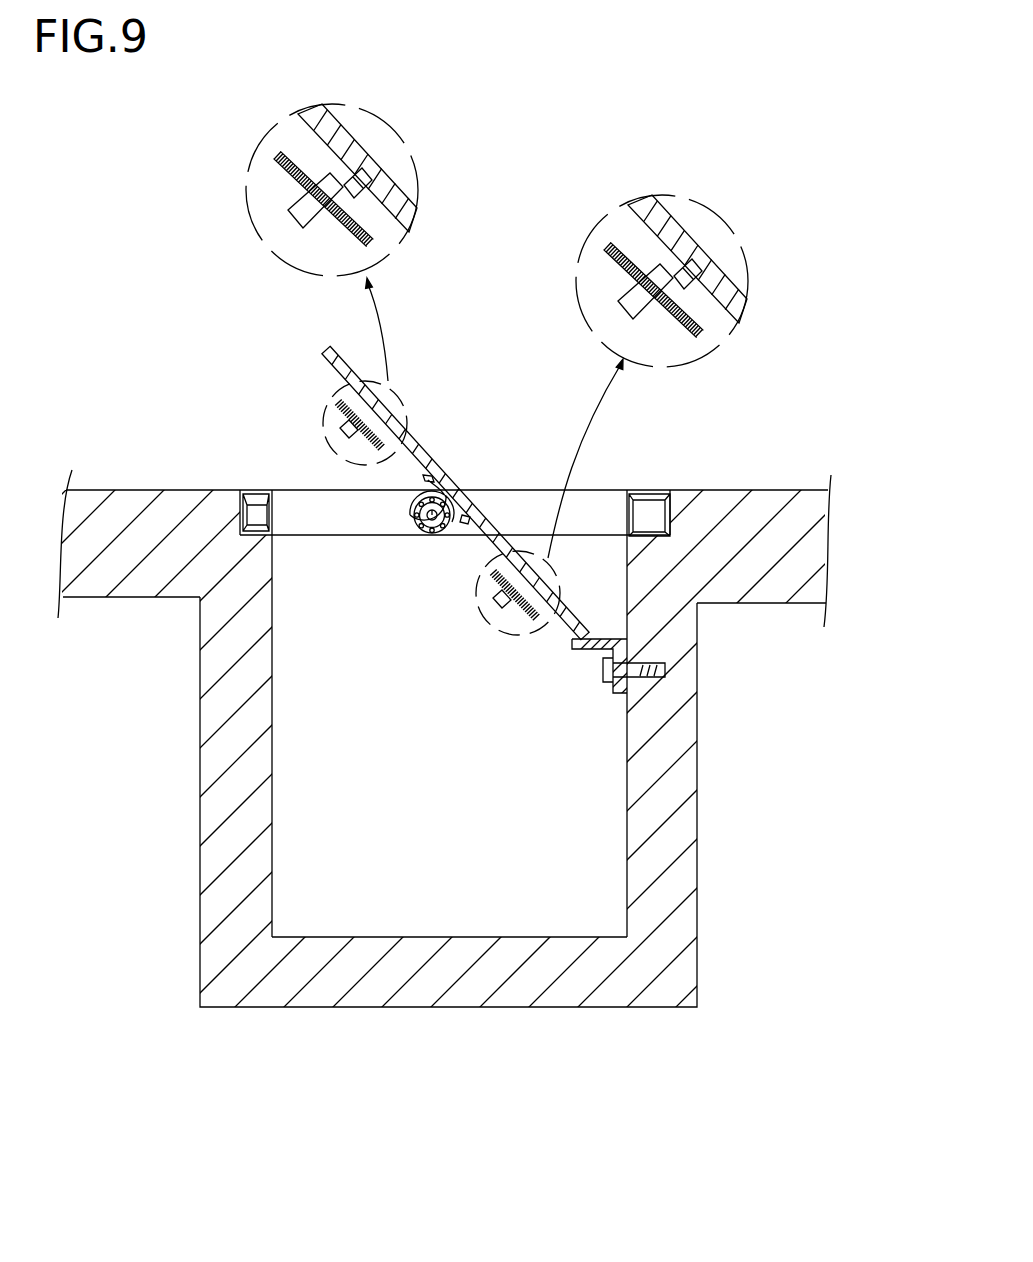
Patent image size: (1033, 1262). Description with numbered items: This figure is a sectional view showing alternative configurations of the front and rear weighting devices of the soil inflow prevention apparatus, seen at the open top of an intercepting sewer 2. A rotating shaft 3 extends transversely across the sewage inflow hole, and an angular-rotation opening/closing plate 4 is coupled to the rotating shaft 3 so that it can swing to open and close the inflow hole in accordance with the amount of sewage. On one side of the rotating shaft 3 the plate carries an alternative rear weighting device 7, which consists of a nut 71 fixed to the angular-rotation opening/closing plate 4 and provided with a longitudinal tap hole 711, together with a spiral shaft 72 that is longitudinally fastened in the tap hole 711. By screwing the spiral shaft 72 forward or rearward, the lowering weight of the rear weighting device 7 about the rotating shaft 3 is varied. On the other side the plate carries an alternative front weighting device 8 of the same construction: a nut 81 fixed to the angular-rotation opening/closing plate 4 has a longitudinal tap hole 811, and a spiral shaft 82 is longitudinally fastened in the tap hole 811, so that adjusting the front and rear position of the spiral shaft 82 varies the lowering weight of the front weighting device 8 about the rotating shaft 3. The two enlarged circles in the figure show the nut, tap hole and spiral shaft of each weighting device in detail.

The intercepting sewer 2 is at (448, 893).
The rotating shaft 3 is at (440, 500).
The angular-rotation opening/closing plate 4 is at (425, 452).
The rear weighting device 7 is at (490, 622).
The nut 71 is at (630, 307).
The tap hole 711 is at (638, 277).
The spiral shaft 72 is at (688, 307).
The front weighting device 8 is at (340, 441).
The nut 81 is at (300, 212).
The tap hole 811 is at (303, 197).
The spiral shaft 82 is at (358, 205).